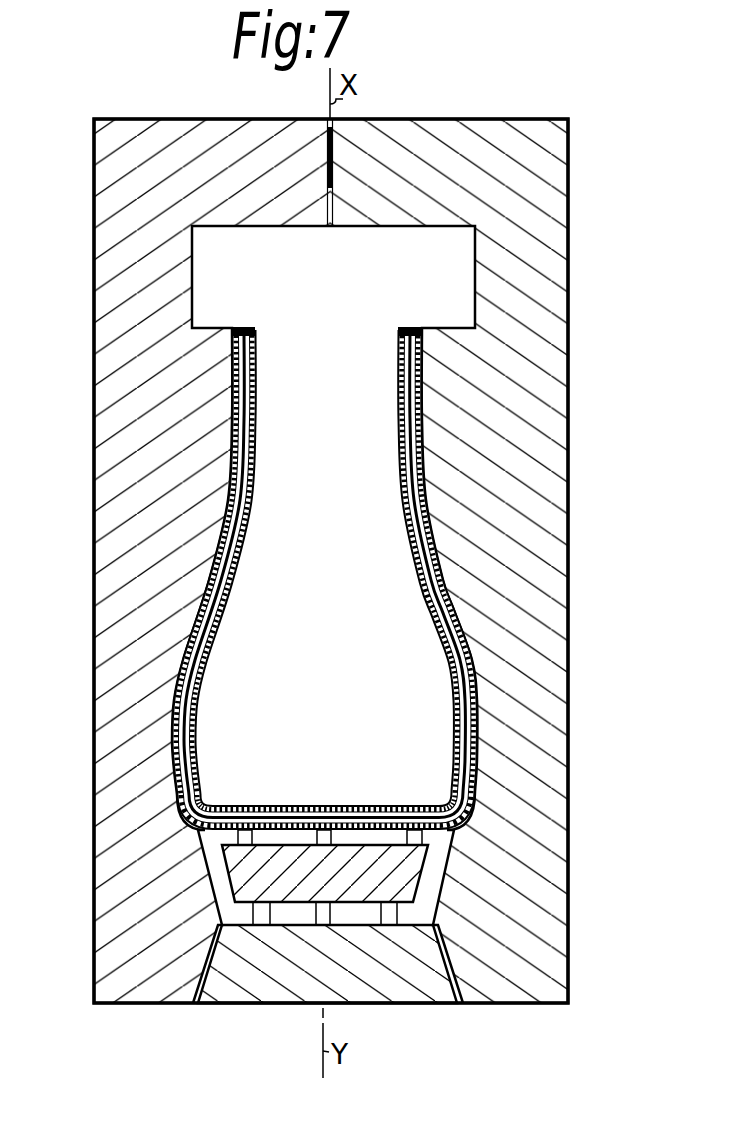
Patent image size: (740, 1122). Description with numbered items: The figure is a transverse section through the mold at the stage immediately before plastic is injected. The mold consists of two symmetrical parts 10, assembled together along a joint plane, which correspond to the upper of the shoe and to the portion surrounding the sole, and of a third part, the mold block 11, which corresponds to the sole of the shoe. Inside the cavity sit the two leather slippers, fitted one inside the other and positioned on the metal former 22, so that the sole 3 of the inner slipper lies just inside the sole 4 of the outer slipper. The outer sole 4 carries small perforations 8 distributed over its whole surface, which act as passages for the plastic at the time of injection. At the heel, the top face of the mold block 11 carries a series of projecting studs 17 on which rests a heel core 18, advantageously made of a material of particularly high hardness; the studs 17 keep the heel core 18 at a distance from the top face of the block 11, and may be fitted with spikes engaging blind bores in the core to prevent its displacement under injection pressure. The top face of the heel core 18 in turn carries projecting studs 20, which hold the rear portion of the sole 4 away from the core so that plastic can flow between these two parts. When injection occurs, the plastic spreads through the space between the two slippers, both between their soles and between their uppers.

The symmetrical mold parts 10 is at (140, 216).
The metal former 22 is at (415, 658).
The projecting studs 20 is at (423, 839).
The heel core 18 is at (402, 877).
The projecting studs 17 is at (392, 912).
The mold block 11 is at (238, 990).
The sole of the inner slipper 3 is at (348, 807).
The small perforations 8 is at (287, 807).
The sole of the outer slipper 4 is at (268, 807).